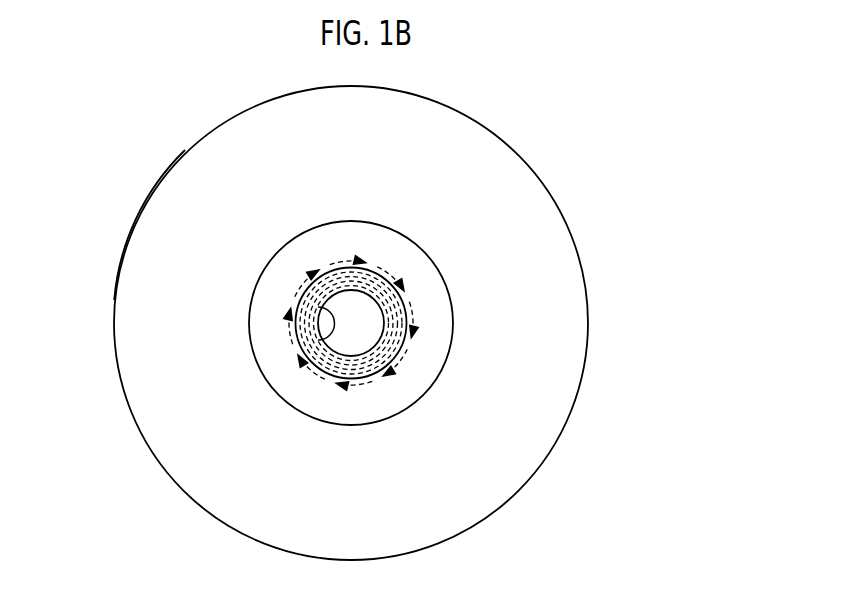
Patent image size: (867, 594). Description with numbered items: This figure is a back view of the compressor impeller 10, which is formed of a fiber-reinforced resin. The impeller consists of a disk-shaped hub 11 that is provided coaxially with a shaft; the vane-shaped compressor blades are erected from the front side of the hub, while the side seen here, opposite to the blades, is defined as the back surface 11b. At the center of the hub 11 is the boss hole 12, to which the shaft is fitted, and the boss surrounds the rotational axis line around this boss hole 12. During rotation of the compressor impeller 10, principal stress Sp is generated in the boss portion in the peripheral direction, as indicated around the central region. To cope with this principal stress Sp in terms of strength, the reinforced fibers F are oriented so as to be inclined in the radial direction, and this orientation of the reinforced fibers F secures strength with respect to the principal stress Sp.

The compressor impeller 10 is at (336, 317).
The hub 11 is at (190, 147).
The back surface 11b is at (163, 202).
The boss hole 12 is at (320, 341).
The reinforced fibers F is at (368, 262).
The principal stress Sp is at (380, 440).